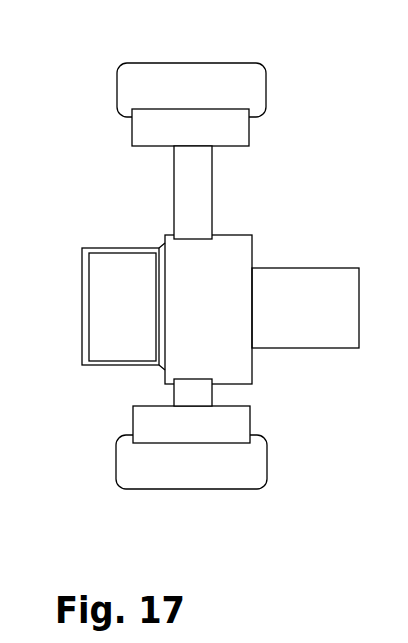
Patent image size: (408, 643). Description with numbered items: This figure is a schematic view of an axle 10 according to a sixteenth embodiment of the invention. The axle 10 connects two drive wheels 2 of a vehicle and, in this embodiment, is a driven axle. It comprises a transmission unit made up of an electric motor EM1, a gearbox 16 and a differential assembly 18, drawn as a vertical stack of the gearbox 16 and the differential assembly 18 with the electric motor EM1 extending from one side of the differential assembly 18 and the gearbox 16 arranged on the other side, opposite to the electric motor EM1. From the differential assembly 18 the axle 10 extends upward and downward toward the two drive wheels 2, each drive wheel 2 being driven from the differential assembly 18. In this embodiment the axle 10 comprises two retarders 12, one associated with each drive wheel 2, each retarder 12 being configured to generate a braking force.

The drive wheel 2 is at (259, 63).
The axle 10 is at (195, 277).
The retarder 12 is at (148, 129).
The gearbox 16 is at (122, 248).
The differential assembly 18 is at (237, 328).
The electric motor EM1 is at (327, 282).